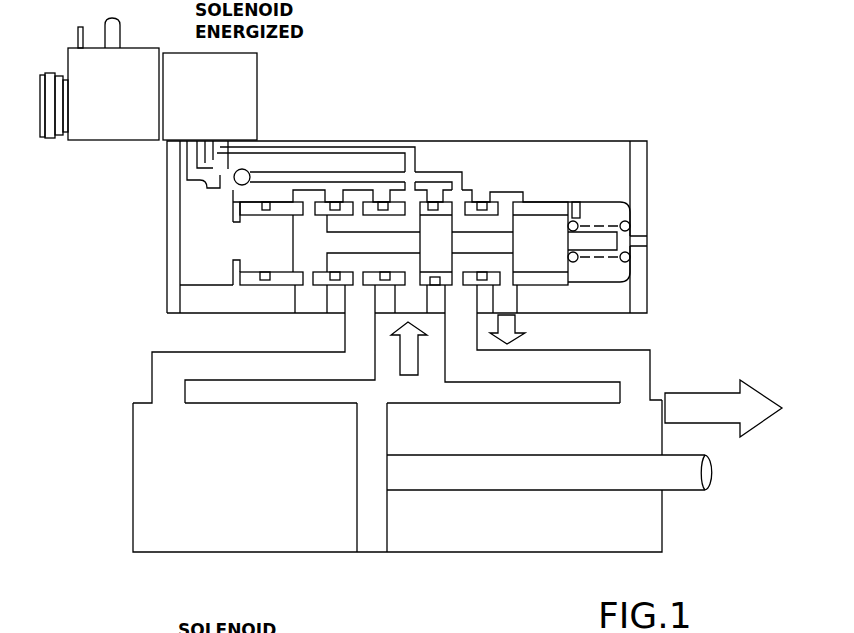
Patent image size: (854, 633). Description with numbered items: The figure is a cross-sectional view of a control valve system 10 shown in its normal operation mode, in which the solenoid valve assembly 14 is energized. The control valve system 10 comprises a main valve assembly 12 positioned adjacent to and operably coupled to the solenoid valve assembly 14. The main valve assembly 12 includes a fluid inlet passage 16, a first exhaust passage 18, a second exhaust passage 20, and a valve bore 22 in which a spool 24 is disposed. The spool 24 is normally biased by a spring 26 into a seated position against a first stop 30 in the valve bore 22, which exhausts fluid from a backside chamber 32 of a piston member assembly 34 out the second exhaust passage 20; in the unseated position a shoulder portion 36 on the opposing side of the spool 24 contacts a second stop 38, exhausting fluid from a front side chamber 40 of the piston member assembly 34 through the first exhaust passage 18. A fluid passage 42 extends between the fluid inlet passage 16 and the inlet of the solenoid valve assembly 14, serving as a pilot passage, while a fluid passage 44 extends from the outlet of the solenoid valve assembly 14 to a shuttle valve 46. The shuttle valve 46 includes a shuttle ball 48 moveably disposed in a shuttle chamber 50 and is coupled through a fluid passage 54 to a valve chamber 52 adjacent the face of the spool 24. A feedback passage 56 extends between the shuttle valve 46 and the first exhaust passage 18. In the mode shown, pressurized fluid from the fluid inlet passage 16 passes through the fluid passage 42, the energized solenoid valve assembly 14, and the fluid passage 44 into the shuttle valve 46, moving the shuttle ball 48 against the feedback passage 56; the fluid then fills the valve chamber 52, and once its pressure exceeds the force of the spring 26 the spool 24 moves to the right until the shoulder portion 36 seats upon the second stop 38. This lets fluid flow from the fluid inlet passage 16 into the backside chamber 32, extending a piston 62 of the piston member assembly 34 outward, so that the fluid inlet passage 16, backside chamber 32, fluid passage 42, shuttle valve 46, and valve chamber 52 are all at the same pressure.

The control valve system 10 is at (726, 74).
The main valve assembly 12 is at (523, 141).
The solenoid valve assembly 14 is at (104, 142).
The fluid inlet passage 16 is at (412, 305).
The first exhaust passage 18 is at (513, 305).
The second exhaust passage 20 is at (310, 307).
The valve bore 22 is at (245, 247).
The spool 24 is at (532, 220).
The spring 26 is at (629, 226).
The first stop 30 is at (234, 272).
The backside chamber 32 is at (270, 553).
The piston member assembly 34 is at (389, 565).
The shoulder portion 36 is at (572, 263).
The second stop 38 is at (582, 207).
The front side chamber 40 is at (640, 412).
The fluid passage 42 is at (351, 148).
The fluid passage 44 is at (190, 160).
The shuttle valve 46 is at (230, 166).
The shuttle ball 48 is at (246, 171).
The shuttle chamber 50 is at (210, 166).
The valve chamber 52 is at (197, 235).
The fluid passage 54 is at (220, 192).
The feedback passage 56 is at (440, 170).
The piston 62 is at (677, 488).